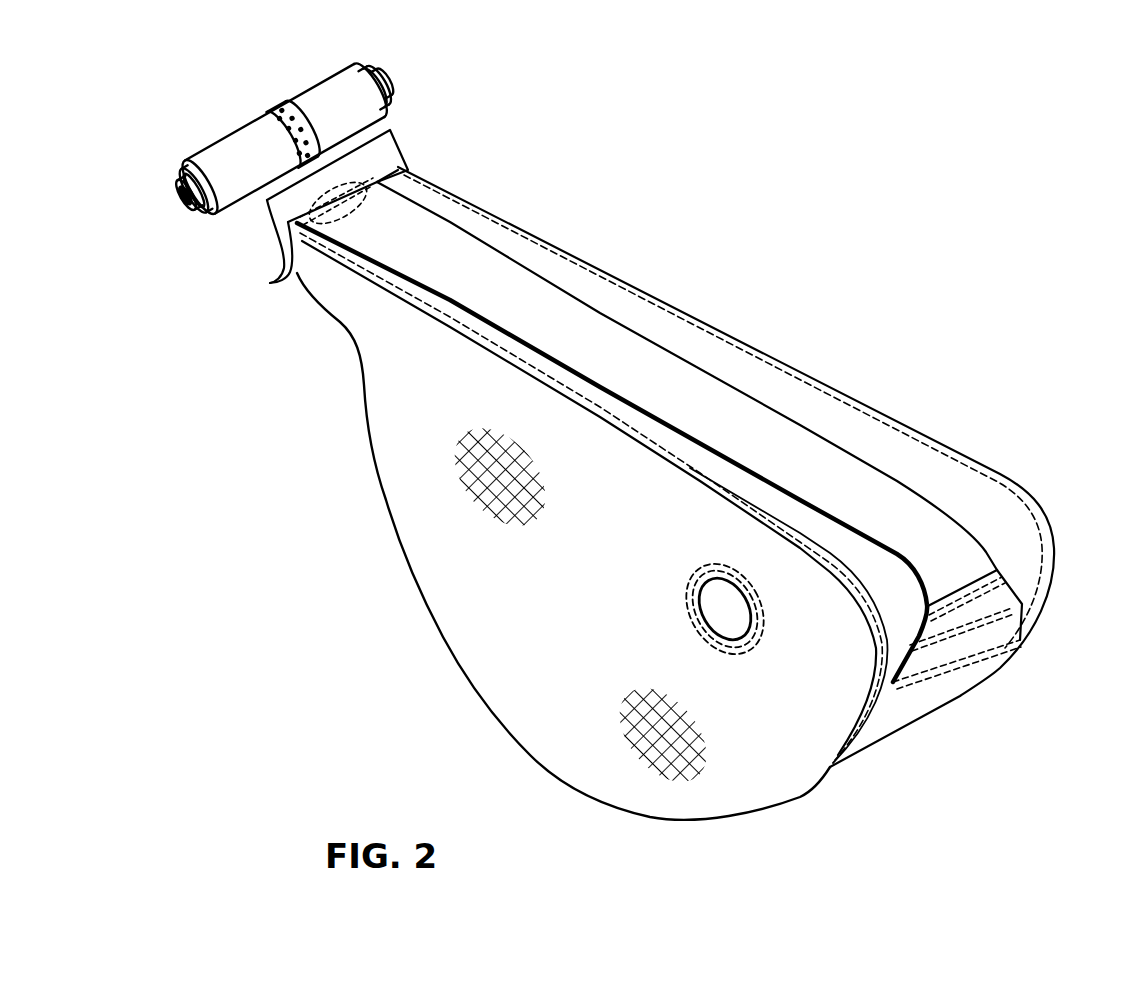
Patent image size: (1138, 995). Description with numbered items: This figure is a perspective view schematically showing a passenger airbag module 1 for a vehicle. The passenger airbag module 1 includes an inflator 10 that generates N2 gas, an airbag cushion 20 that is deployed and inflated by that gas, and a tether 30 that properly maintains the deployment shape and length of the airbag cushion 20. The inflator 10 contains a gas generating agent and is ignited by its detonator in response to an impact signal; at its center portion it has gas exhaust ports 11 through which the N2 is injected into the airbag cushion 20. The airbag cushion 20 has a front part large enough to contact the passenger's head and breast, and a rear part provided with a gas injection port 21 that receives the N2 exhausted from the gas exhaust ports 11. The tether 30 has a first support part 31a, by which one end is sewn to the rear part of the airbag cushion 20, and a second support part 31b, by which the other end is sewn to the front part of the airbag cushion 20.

The passenger airbag module 1 is at (932, 236).
The inflator 10 is at (283, 138).
The gas exhaust ports 11 is at (283, 117).
The airbag cushion 20 is at (445, 638).
The gas injection port 21 is at (353, 178).
The tether 30 is at (637, 352).
The first support part 31a is at (300, 237).
The second support part 31b is at (977, 627).